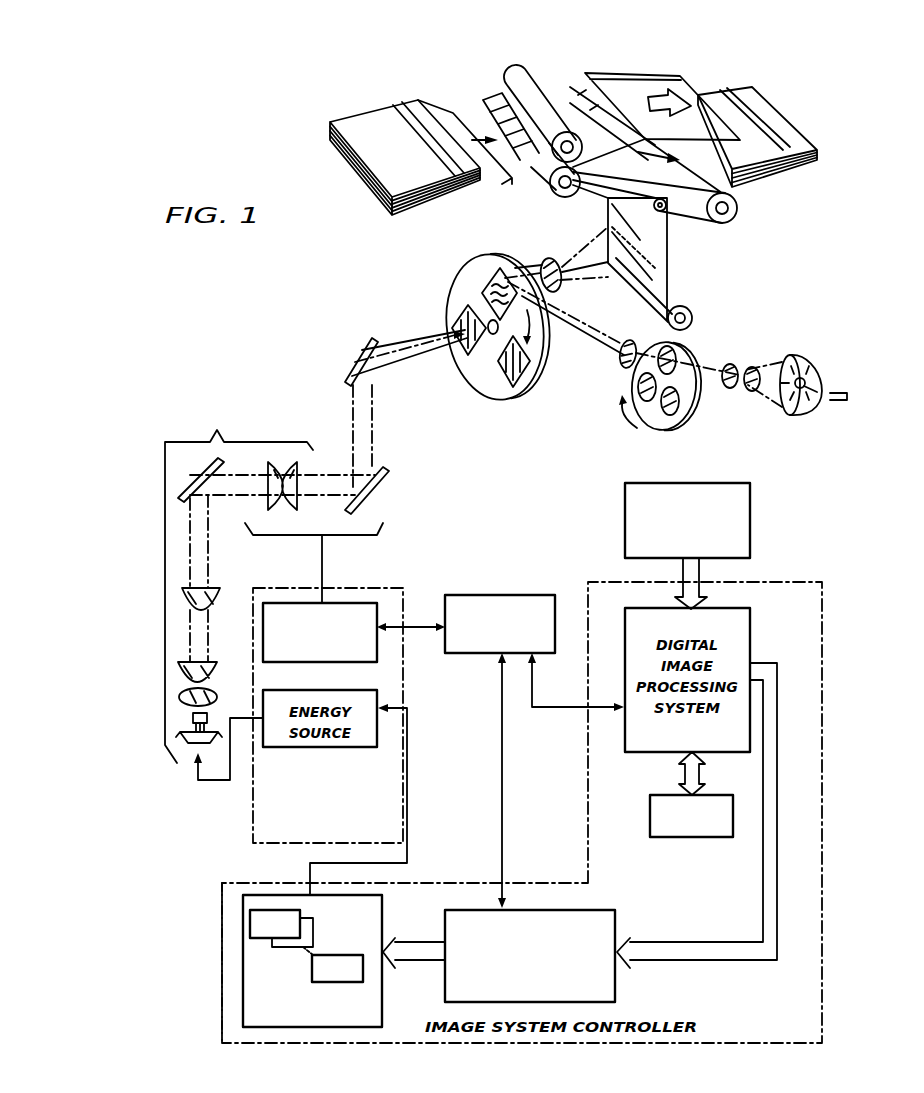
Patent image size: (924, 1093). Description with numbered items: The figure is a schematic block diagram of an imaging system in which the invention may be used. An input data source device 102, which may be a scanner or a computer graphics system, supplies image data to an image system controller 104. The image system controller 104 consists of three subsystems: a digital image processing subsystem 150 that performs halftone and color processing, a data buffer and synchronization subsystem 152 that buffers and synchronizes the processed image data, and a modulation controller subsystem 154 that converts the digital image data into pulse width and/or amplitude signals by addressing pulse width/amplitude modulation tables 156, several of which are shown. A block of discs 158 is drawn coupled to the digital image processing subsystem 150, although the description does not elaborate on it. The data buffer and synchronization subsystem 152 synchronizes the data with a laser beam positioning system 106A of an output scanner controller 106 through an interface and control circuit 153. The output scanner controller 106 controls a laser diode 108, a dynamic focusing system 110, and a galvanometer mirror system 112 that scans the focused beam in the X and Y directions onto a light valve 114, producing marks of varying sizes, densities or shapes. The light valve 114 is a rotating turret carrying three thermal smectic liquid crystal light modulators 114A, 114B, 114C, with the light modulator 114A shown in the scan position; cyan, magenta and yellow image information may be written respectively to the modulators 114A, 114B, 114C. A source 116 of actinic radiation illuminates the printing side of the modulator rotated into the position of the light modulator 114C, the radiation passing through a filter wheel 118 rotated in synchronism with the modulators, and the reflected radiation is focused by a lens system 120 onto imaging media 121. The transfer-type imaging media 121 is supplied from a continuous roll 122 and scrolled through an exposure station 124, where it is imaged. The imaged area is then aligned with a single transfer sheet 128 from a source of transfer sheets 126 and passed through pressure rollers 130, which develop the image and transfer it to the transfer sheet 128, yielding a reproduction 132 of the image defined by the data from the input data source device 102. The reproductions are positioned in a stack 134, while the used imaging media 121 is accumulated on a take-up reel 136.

The input data source device 102 is at (752, 520).
The image system controller 104 is at (220, 972).
The output scanner controller 106 is at (250, 827).
The laser beam positioning system 106A is at (357, 602).
The laser diode 108 is at (187, 715).
The dynamic focusing system 110 is at (239, 581).
The galvanometer mirror system 112 is at (350, 355).
The light valve 114 is at (455, 282).
The liquid crystal light modulator 114A is at (463, 318).
The liquid crystal light modulator 114B is at (513, 385).
The liquid crystal light modulator 114C is at (495, 272).
The source of actinic radiation 116 is at (813, 415).
The filter wheel 118 is at (680, 415).
The lens system 120 is at (562, 285).
The imaging media 121 is at (670, 248).
The continuous roll 122 is at (692, 323).
The exposure station 124 is at (616, 246).
The source of transfer sheets 126 is at (385, 114).
The transfer sheet 128 is at (490, 97).
The pressure rollers 130 is at (510, 68).
The reproduction 132 is at (648, 82).
The stack 134 is at (760, 100).
The take-up reel 136 is at (724, 222).
The digital image processing subsystem 150 is at (637, 603).
The data buffer and synchronization subsystem 152 is at (617, 993).
The interface and control circuit 153 is at (470, 657).
The modulation controller subsystem 154 is at (243, 1012).
The pulse width/amplitude modulation (PWAM) table 156 is at (250, 922).
The discs 158 is at (687, 838).